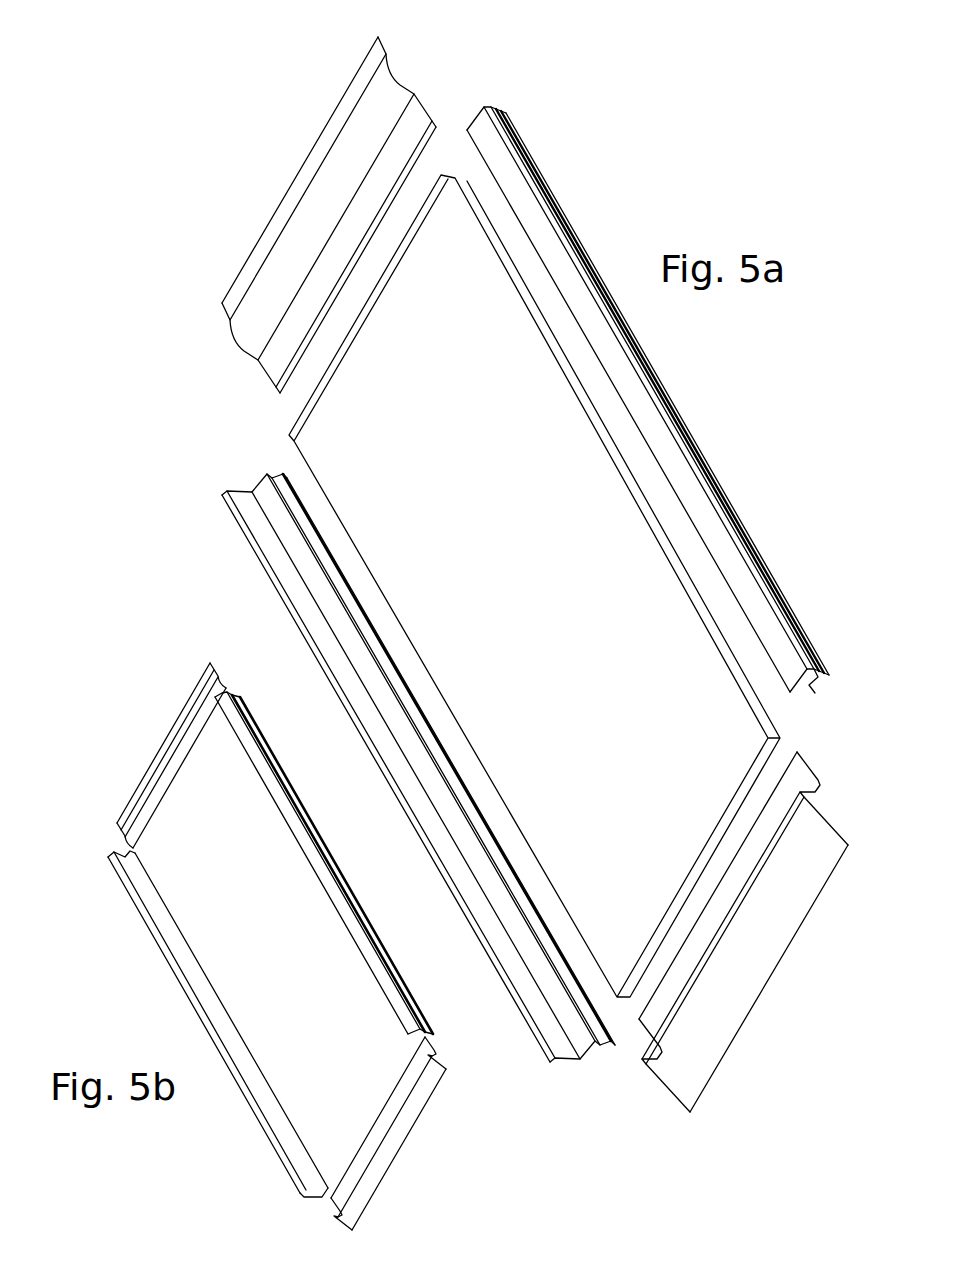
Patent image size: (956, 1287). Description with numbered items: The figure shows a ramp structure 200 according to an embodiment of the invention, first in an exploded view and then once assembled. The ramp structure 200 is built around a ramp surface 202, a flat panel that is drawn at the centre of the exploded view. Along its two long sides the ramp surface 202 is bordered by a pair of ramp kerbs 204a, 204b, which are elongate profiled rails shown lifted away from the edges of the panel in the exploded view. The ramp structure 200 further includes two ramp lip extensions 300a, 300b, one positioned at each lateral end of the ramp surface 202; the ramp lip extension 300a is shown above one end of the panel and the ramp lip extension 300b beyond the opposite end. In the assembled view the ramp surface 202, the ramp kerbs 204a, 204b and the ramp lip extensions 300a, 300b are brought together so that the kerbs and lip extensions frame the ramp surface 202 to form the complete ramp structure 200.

The ramp structure 200 is at (183, 397).
The ramp surface 202 is at (441, 175).
The ramp kerb 204a is at (288, 555).
The ramp kerb 204b is at (715, 518).
The ramp lip extension 300a is at (322, 183).
The ramp lip extension 300b is at (763, 937).